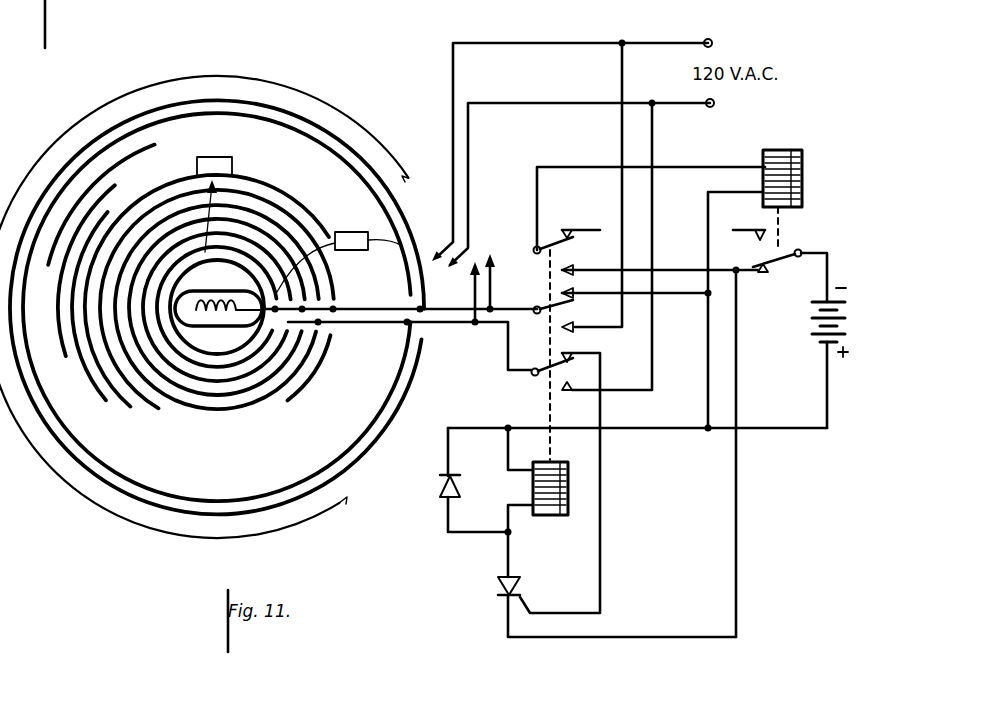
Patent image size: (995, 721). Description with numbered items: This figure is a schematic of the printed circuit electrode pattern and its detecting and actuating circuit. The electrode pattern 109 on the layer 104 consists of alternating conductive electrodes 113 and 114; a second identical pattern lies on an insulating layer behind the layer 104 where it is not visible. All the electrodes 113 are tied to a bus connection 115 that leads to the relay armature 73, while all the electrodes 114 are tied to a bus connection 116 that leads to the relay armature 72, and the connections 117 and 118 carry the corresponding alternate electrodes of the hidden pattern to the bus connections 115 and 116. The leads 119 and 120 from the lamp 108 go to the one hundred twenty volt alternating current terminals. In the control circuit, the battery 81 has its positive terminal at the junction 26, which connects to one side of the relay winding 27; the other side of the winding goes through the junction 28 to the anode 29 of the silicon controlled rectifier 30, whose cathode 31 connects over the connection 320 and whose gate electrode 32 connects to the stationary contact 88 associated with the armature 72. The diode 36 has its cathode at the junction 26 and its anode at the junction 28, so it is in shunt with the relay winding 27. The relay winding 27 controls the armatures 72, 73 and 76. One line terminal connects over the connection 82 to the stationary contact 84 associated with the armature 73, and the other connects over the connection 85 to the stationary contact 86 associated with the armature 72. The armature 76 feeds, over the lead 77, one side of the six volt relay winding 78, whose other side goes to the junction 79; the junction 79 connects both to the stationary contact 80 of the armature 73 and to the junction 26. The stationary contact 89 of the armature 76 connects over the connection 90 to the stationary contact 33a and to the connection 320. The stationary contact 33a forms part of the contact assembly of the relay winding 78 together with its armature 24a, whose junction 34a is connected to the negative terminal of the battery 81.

The layer 104 is at (345, 125).
The lamp 108 is at (216, 286).
The electrode pattern 109 is at (281, 111).
The electrodes 113 is at (213, 157).
The electrodes 114 is at (349, 232).
The bus connection 115 is at (489, 326).
The bus connection 116 is at (438, 327).
The connection 117 is at (493, 264).
The connection 118 is at (470, 290).
The lead 119 is at (300, 296).
The lead 120 is at (282, 340).
The connection 82 is at (620, 131).
The stationary contact 84 is at (590, 329).
The connection 85 is at (655, 134).
The stationary contact 86 is at (573, 399).
The lead 77 is at (728, 165).
The relay armature 76 is at (553, 233).
The relay winding 78 is at (803, 172).
The connection 90 is at (705, 268).
The stationary contact 89 is at (580, 259).
The junction 79 is at (703, 299).
The stationary contact 80 is at (582, 300).
The relay armature 73 is at (545, 300).
The relay armature 72 is at (546, 363).
The stationary contact 88 is at (560, 483).
The junction 34a is at (801, 252).
The stationary contact 33a is at (762, 275).
The armature 24a is at (803, 277).
The battery 81 is at (808, 358).
The junction 26 is at (512, 427).
The diode 36 is at (437, 491).
The relay winding 27 is at (533, 492).
The junction 28 is at (507, 535).
The silicon controlled rectifier 30 is at (497, 584).
The anode 29 is at (514, 578).
The gate electrode 32 is at (524, 598).
The cathode 31 is at (502, 598).
The connection 320 is at (739, 533).